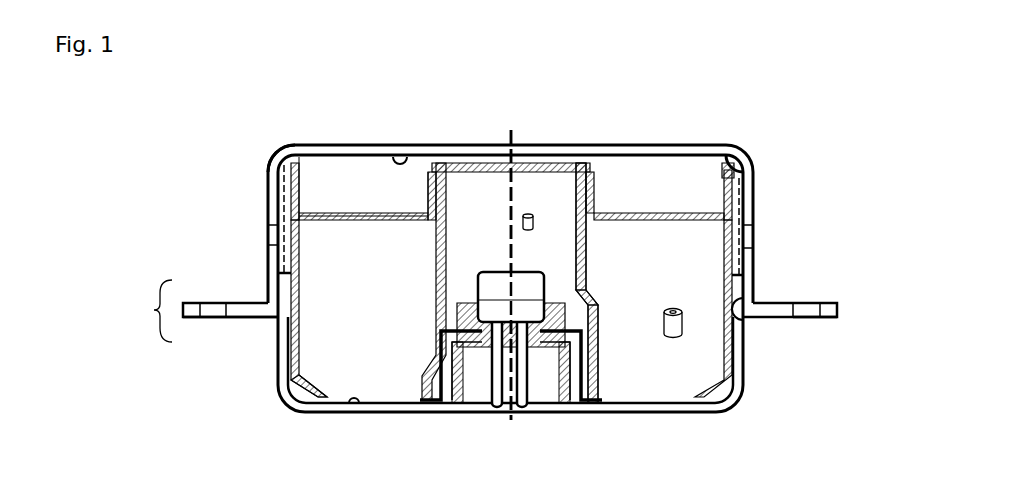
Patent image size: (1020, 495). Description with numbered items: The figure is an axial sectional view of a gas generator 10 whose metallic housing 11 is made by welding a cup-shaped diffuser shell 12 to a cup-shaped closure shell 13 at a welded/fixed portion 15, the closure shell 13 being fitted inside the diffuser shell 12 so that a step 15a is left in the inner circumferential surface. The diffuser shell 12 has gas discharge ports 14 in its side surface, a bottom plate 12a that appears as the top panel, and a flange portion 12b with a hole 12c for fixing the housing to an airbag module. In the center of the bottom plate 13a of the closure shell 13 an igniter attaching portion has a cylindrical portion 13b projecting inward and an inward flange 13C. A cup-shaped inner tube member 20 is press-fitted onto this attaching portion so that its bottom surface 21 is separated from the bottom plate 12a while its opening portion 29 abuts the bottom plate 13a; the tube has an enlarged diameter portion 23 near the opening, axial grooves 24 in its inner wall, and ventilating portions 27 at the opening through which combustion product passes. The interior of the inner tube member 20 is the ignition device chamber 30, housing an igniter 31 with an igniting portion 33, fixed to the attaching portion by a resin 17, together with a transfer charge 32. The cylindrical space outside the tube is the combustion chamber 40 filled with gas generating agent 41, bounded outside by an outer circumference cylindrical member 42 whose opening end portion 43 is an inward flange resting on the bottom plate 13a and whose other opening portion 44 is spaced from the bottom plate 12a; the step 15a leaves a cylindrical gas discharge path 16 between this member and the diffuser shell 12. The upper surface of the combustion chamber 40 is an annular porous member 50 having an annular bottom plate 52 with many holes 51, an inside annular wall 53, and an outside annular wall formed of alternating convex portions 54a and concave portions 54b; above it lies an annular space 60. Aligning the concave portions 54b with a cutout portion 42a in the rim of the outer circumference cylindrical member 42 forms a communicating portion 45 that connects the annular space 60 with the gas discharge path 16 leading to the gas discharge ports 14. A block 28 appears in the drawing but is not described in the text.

The gas generator 10 is at (596, 143).
The housing 11 is at (151, 311).
The diffuser shell 12 is at (270, 286).
The bottom plate of the diffuser shell 12a is at (402, 157).
The flange portion 12b is at (815, 303).
The hole 12c is at (810, 318).
The closure shell 13 is at (283, 327).
The bottom plate of the closure shell 13a is at (356, 397).
The cylindrical portion 13b is at (572, 392).
The inward flange 13C is at (533, 395).
The gas discharge ports 14 is at (281, 236).
The welded/fixed portion 15 is at (747, 325).
The step 15a is at (755, 252).
The gas discharge path 16 is at (752, 162).
The resin 17 is at (468, 372).
The inner tube member 20 is at (586, 271).
The bottom surface of the inner tube member 21 is at (466, 163).
The enlarged diameter portion 23 is at (599, 352).
The grooves 24 is at (592, 320).
The ventilating portions 27 is at (421, 385).
The potting block 28 is at (511, 325).
The opening portion of the inner tube member 29 is at (598, 400).
The ignition device chamber 30 is at (510, 283).
The igniter 31 is at (523, 284).
The transfer charge 32 is at (530, 213).
The igniting portion 33 is at (500, 270).
The combustion chamber 40 is at (656, 381).
The gas generating agent 41 is at (672, 308).
The outer circumference cylindrical member 42 is at (302, 330).
The cutout portion 42a is at (740, 165).
The opening end portion 43 is at (316, 393).
The opening portion of the outer circumference cylindrical member 44 is at (293, 147).
The communicating portion 45 is at (727, 162).
The annular porous member 50 is at (343, 222).
The holes 51 is at (658, 222).
The annular bottom plate 52 is at (385, 222).
The inside annular wall 53 is at (598, 188).
The convex portions 54a is at (303, 182).
The concave portions 54b is at (723, 183).
The annular space 60 is at (367, 188).